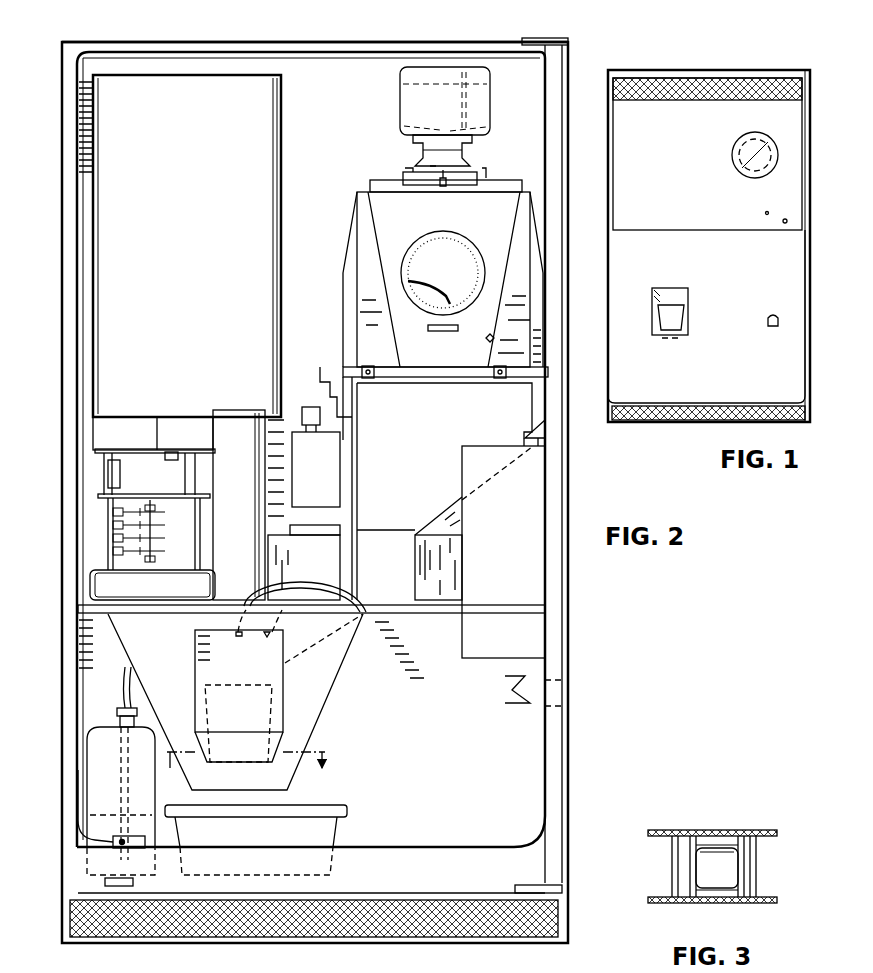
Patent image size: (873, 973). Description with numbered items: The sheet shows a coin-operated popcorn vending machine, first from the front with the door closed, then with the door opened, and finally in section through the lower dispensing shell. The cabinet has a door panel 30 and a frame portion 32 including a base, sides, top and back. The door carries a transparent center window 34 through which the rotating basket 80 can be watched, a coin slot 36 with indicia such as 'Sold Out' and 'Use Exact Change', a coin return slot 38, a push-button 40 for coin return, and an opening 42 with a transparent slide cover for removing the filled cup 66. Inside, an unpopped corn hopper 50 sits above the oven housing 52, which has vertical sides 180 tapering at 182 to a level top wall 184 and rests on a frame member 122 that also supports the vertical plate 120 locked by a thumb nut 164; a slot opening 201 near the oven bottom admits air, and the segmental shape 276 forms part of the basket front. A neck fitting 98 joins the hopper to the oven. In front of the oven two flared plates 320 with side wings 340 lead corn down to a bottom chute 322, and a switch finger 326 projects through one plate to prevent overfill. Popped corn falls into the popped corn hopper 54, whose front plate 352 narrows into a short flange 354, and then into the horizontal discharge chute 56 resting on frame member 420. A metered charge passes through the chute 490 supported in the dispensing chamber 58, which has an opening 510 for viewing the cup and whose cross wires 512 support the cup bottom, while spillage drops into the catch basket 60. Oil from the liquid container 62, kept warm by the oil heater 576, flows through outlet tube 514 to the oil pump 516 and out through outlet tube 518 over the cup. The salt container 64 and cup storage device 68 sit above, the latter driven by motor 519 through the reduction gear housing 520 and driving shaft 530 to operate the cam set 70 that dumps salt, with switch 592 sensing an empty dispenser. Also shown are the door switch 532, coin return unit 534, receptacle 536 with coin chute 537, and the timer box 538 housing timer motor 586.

In FIG. 2, the door panel 30 is at (568, 60).
In FIG. 1, the door panel 30 is at (706, 106).
In FIG. 2, the frame portion 32 is at (215, 42).
In FIG. 1, the center window 34 is at (736, 148).
In FIG. 1, the coin slot 36 is at (770, 222).
In FIG. 1, the coin return slot 38 is at (770, 318).
In FIG. 1, the push-button 40 is at (785, 224).
In FIG. 1, the opening 42 is at (658, 292).
In FIG. 2, the unpopped corn hopper 50 is at (398, 103).
In FIG. 2, the oven housing 52 is at (451, 279).
In FIG. 2, the popped corn hopper 54 is at (368, 384).
In FIG. 2, the horizontal discharge chute 56 is at (330, 566).
In FIG. 2, the dispensing chamber 58 is at (316, 676).
In FIG. 3, the dispensing chamber 58 is at (704, 829).
In FIG. 2, the catch basket 60 is at (342, 820).
In FIG. 2, the liquid container 62 is at (96, 790).
In FIG. 2, the salt container 64 is at (232, 600).
In FIG. 2, the cup 66 is at (256, 710).
In FIG. 1, the cup 66 is at (680, 318).
In FIG. 3, the cup 66 is at (690, 856).
In FIG. 2, the cup storage device 68 is at (112, 180).
In FIG. 2, the cam set 70 is at (96, 525).
In FIG. 2, the rotating basket 80 is at (456, 252).
In FIG. 2, the bottle neck 98 is at (424, 158).
In FIG. 2, the vertical plate 120 is at (372, 190).
In FIG. 2, the frame member 122 is at (338, 370).
In FIG. 2, the thumb nut 164 is at (443, 186).
In FIG. 2, the vertical sides 180 is at (345, 302).
In FIG. 2, the tapered portion 182 is at (346, 260).
In FIG. 2, the top wall 184 is at (500, 184).
In FIG. 2, the slot opening 201 is at (450, 335).
In FIG. 2, the segmental shape 276 is at (428, 296).
In FIG. 2, the flared plates 320 is at (375, 225).
In FIG. 2, the bottom chute 322 is at (452, 378).
In FIG. 2, the switch finger 326 is at (491, 334).
In FIG. 2, the side wings 340 is at (372, 290).
In FIG. 2, the front plate 352 is at (400, 432).
In FIG. 2, the short flange 354 is at (394, 532).
In FIG. 2, the frame member 420 is at (84, 622).
In FIG. 2, the chute 490 is at (306, 645).
In FIG. 2, the opening 510 is at (196, 662).
In FIG. 3, the cross wires 512 is at (726, 840).
In FIG. 2, the outlet tube 514 is at (126, 672).
In FIG. 2, the oil pump 516 is at (320, 536).
In FIG. 2, the outlet tube 518 is at (340, 596).
In FIG. 2, the motor 519 is at (108, 480).
In FIG. 2, the reduction gear housing 520 is at (186, 476).
In FIG. 2, the driving shaft 530 is at (150, 560).
In FIG. 2, the door switch 532 is at (113, 842).
In FIG. 2, the coin return unit 534 is at (512, 705).
In FIG. 2, the receptacle 536 is at (532, 614).
In FIG. 2, the coin chute 537 is at (538, 428).
In FIG. 2, the timer box 538 is at (334, 480).
In FIG. 2, the oil heater 576 is at (120, 887).
In FIG. 2, the timer motor 586 is at (304, 412).
In FIG. 2, the switch 592 is at (168, 456).